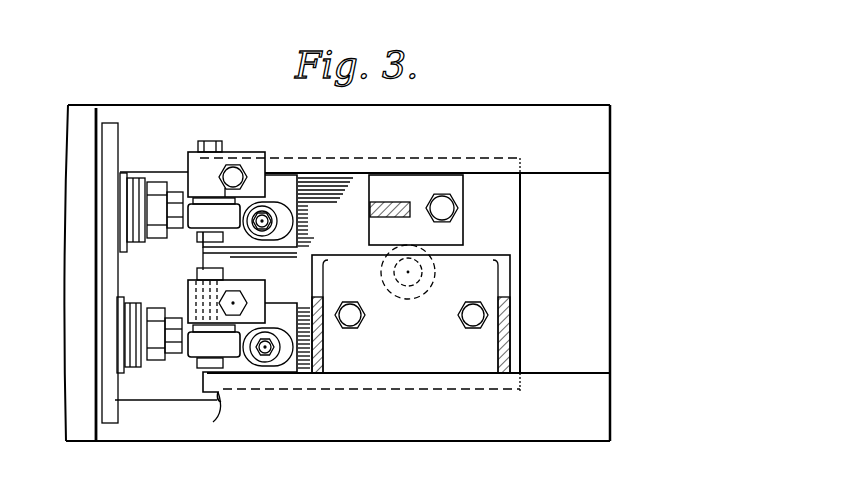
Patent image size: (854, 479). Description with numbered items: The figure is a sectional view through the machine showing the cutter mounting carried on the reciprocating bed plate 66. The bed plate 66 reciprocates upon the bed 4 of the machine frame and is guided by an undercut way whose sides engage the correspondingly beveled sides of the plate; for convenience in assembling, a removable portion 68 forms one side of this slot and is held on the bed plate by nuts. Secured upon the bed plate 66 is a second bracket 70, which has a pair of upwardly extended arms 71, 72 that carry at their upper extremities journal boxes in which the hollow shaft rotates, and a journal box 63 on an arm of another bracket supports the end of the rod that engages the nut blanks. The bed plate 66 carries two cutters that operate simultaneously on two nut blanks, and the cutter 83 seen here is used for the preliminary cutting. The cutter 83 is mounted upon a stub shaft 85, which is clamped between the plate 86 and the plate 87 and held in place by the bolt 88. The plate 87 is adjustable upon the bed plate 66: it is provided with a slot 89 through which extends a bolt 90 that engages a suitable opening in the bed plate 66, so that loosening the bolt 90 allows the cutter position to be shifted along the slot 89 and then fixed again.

The bed 4 is at (337, 273).
The removable portion 68 is at (405, 261).
The bed plate 66 is at (400, 210).
The journal box 63 is at (423, 219).
The second bracket 70 is at (411, 309).
The upwardly extended arm 71 is at (326, 349).
The upwardly extended arm 72 is at (500, 348).
The cutter 83 is at (195, 218).
The stub shaft 85 is at (206, 135).
The plate 86 is at (238, 152).
The plate 87 is at (278, 222).
The bolt 88 is at (242, 173).
The slot 89 is at (280, 221).
The bolt 90 is at (266, 226).